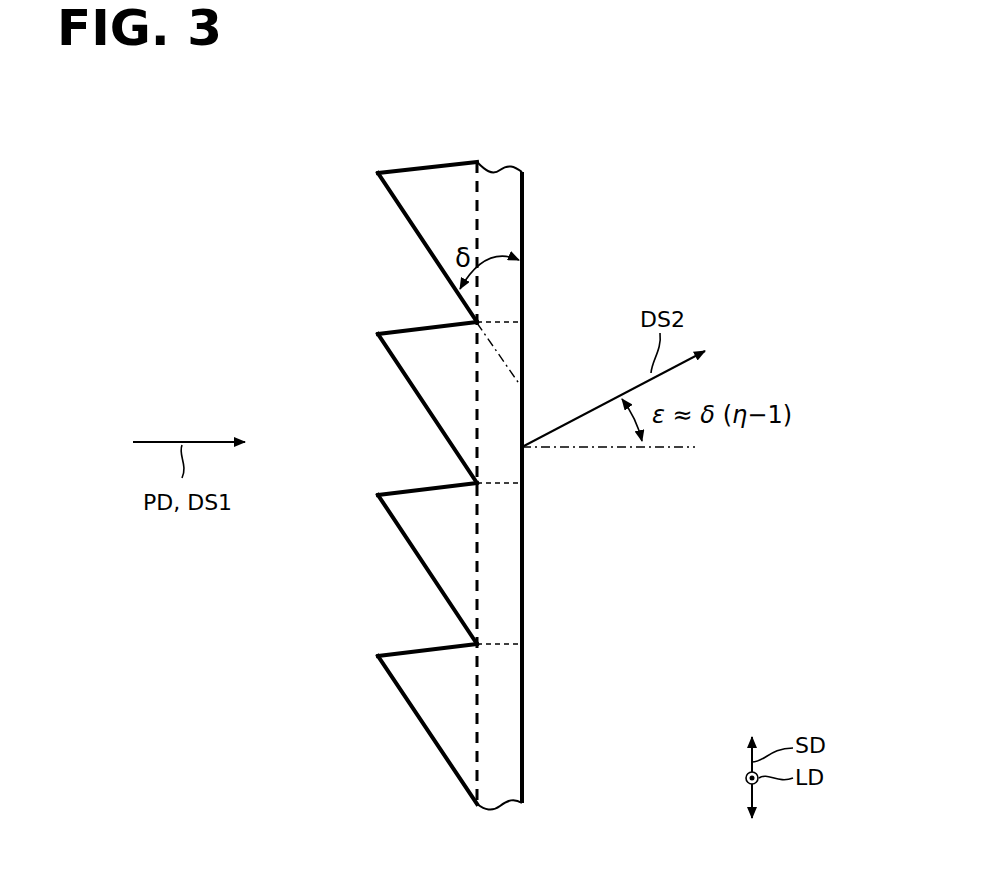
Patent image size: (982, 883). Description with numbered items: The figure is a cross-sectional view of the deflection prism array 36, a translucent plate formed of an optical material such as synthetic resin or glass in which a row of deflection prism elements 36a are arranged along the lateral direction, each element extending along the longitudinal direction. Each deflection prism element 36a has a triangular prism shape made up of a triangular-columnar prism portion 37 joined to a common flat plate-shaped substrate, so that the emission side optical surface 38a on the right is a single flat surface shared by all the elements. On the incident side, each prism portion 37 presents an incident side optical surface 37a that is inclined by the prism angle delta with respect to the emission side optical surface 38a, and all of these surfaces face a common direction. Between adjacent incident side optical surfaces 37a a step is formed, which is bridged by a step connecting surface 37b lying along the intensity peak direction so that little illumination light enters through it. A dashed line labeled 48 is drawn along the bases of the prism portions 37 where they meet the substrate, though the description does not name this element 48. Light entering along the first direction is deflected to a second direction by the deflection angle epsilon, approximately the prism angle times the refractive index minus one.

The deflection prism array 36 is at (418, 115).
The deflection prism element 36a is at (522, 212).
The prism portion 37 is at (440, 257).
The incident side optical surface 37a is at (417, 237).
The step connecting surface 37b is at (428, 166).
The emission side optical surface 38a is at (526, 772).
The base portion 48 is at (498, 182).